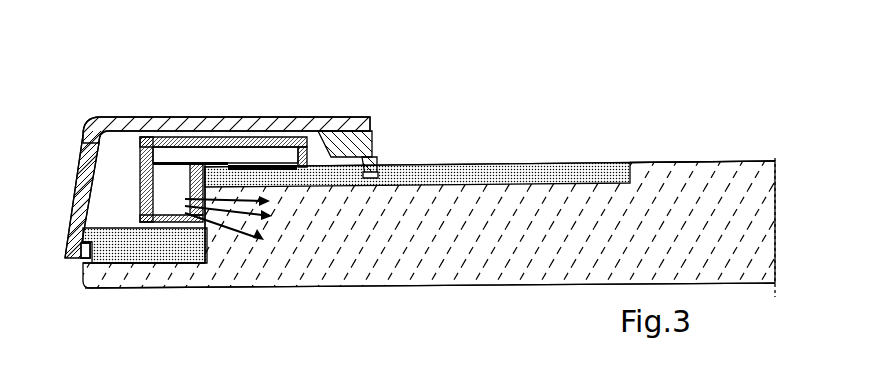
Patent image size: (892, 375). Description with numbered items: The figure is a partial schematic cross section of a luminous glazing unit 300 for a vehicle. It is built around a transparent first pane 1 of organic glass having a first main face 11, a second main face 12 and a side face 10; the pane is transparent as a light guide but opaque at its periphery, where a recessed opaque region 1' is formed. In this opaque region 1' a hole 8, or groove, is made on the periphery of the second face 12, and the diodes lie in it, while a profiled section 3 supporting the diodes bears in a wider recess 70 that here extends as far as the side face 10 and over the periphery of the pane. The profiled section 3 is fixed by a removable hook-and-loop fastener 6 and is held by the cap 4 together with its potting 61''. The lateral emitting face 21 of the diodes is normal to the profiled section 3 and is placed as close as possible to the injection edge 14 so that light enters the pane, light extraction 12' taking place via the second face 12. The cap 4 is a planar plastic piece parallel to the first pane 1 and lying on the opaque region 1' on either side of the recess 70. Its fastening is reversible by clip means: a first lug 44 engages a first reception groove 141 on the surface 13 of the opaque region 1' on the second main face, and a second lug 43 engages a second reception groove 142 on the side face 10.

The luminous glazing unit 300 is at (394, 187).
The first pane 1 is at (429, 227).
The opaque region 1' is at (429, 224).
The first main face 11 is at (348, 286).
The second main face 12 is at (702, 137).
The light extraction 12' is at (753, 204).
The surface of the opaque region 13 is at (497, 166).
The emitting face 21 is at (165, 222).
The hole 8 is at (200, 255).
The profiled section 3 is at (290, 147).
The hook-and-loop fastener 6 is at (260, 165).
The injection edge 14 is at (213, 193).
The recess 70 is at (143, 157).
The cap 4 is at (215, 125).
The potting 61'' is at (249, 155).
The second reception groove 142 is at (66, 250).
The first lug 44 is at (372, 158).
The first reception groove 141 is at (378, 177).
The side face 10 is at (84, 266).
The second lug 43 is at (80, 259).